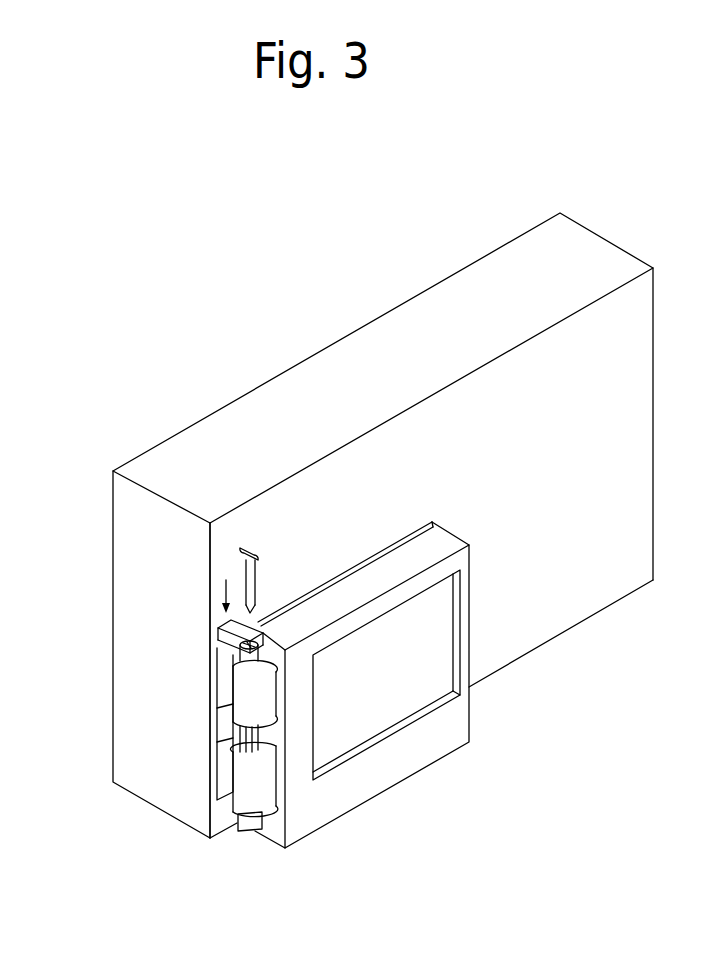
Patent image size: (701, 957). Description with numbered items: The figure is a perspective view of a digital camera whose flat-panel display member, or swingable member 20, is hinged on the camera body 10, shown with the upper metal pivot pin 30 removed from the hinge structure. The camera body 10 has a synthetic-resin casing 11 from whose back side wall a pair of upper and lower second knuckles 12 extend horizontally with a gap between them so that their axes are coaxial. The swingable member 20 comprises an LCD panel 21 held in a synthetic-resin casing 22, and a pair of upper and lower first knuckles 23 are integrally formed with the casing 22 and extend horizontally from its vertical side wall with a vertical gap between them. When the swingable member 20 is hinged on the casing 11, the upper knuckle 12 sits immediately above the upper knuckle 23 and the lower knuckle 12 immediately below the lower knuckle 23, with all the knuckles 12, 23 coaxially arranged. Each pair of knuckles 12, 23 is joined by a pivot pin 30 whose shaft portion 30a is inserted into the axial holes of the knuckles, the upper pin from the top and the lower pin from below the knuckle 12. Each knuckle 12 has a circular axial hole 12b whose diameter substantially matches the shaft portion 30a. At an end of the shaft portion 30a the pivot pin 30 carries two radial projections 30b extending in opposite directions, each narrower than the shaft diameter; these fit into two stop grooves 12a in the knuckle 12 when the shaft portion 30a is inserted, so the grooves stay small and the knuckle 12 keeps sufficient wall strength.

The camera body 10 is at (503, 276).
The casing 11 is at (222, 537).
The second knuckles 12 is at (247, 692).
The stop grooves 12a is at (262, 655).
The axial hole 12b is at (297, 646).
The swingable member 20 is at (438, 540).
The LCD panel 21 is at (425, 668).
The casing 22 is at (464, 563).
The first knuckles 23 is at (247, 781).
The pivot pin 30 is at (268, 554).
The shaft portion 30a is at (253, 597).
The radial projections 30b is at (241, 549).